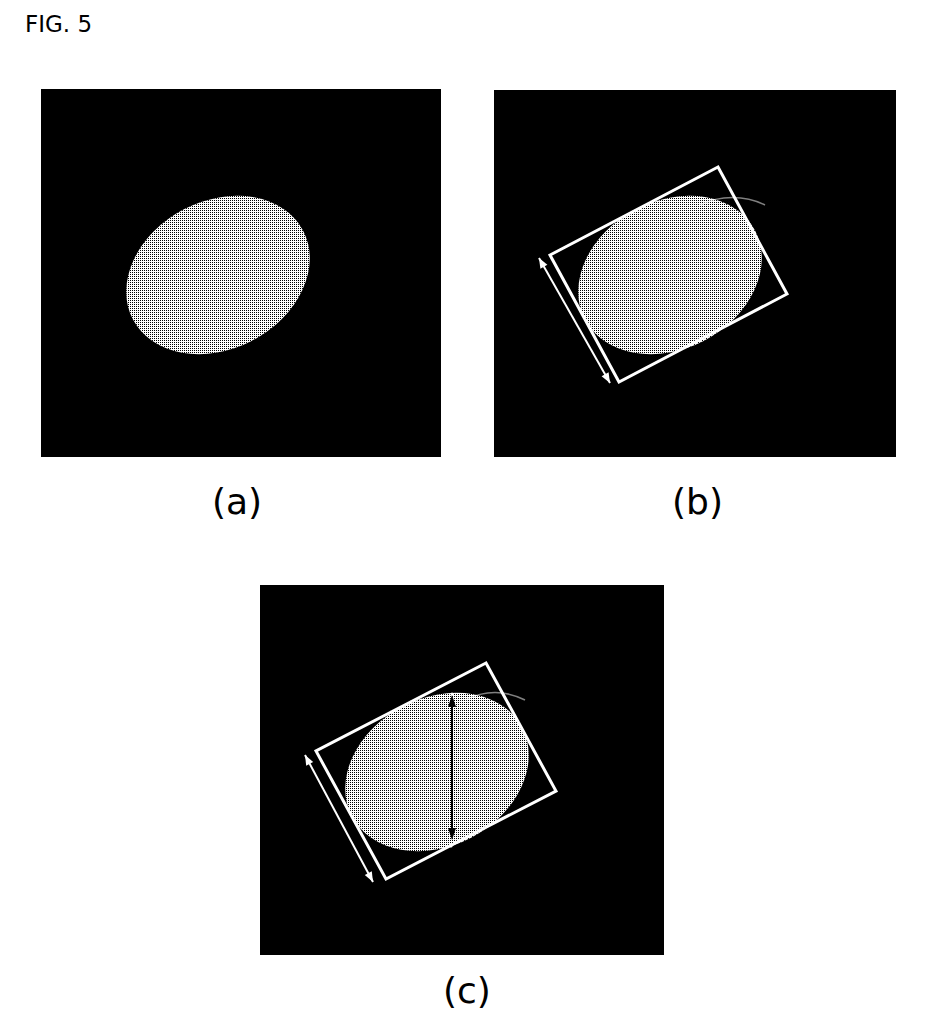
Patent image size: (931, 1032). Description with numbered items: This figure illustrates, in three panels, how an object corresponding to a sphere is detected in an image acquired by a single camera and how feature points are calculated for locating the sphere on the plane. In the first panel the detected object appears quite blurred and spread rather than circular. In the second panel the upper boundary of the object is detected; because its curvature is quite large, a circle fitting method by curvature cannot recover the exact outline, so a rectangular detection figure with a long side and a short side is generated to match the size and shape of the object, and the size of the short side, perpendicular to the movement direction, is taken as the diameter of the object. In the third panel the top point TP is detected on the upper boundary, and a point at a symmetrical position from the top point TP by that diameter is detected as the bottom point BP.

The top point TP is at (452, 692).
The bottom point BP is at (451, 848).